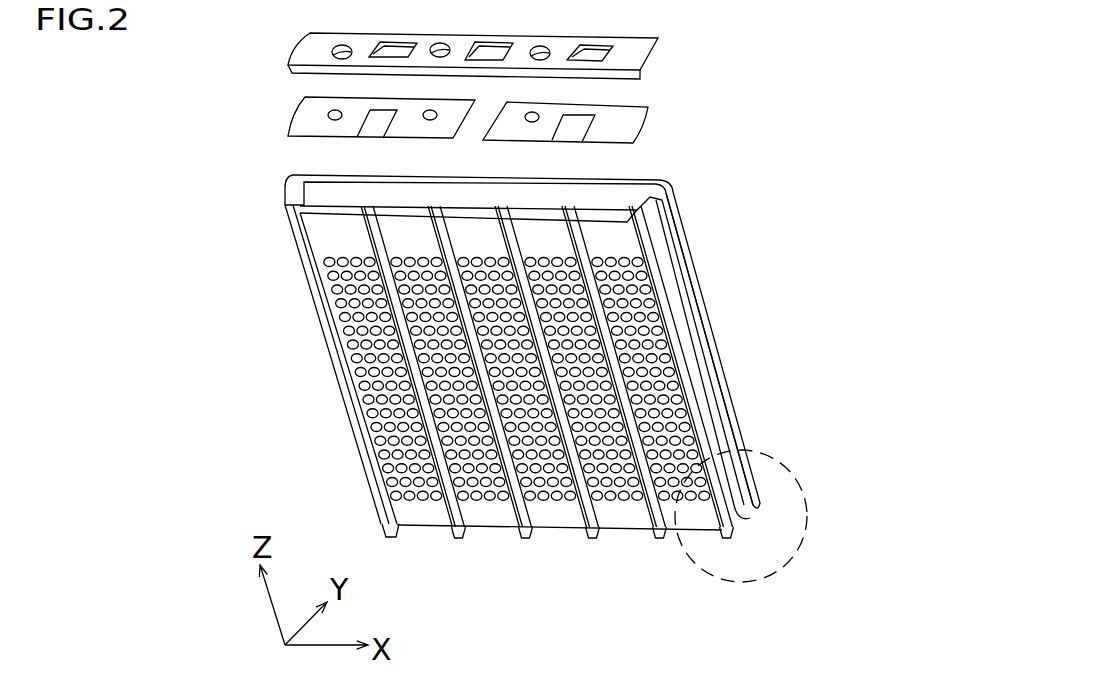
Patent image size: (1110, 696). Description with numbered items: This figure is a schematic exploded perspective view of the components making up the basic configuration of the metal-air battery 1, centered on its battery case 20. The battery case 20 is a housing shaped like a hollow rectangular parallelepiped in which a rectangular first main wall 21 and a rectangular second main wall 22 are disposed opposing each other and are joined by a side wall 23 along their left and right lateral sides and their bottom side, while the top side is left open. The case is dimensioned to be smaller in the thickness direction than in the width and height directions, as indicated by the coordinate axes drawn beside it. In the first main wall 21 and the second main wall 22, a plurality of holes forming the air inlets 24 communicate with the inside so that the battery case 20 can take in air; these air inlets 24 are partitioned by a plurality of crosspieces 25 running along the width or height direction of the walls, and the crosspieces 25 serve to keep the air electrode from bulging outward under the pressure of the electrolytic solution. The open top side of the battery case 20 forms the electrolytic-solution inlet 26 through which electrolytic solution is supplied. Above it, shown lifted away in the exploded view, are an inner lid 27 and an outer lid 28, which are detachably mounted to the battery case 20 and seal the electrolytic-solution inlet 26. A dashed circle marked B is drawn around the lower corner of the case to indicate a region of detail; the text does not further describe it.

The metal-air battery 1 is at (143, 77).
The battery case 20 is at (716, 218).
The first main wall 21 is at (492, 518).
The second main wall 22 is at (722, 357).
The side wall 23 is at (712, 423).
The air inlets 24 is at (332, 336).
The crosspieces 25 is at (447, 512).
The electrolytic-solution inlet 26 is at (607, 205).
The inner lid 27 is at (633, 118).
The outer lid 28 is at (648, 52).
The enlarged region B is at (802, 495).